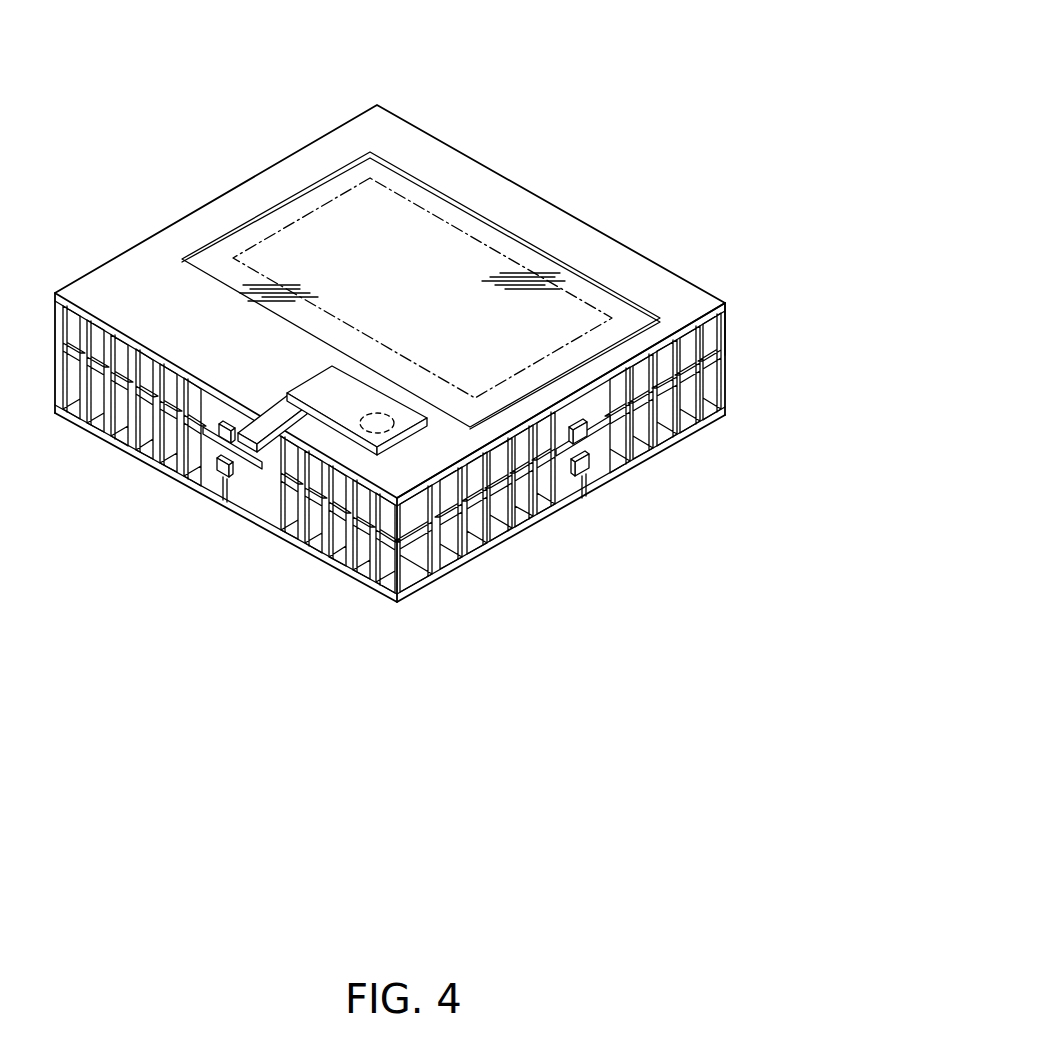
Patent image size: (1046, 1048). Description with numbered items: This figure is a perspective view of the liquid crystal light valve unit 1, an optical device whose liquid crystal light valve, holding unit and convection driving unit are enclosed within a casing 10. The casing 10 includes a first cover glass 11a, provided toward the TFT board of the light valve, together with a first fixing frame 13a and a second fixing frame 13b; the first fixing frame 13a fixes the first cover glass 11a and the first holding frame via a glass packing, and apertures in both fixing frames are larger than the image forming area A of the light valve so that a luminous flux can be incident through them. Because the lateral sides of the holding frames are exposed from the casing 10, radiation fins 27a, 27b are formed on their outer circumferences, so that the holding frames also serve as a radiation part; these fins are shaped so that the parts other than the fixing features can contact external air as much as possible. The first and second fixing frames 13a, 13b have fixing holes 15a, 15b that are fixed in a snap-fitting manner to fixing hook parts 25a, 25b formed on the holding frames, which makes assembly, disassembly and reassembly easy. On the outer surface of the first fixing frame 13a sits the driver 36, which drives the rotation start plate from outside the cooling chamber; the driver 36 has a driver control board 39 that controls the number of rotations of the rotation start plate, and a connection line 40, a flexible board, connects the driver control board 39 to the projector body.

The liquid crystal light valve unit 1 is at (447, 347).
The casing 10 is at (447, 396).
The first cover glass 11a is at (453, 220).
The first fixing frame 13a is at (372, 120).
The second fixing frame 13b is at (425, 603).
The fixing hole 15a is at (247, 430).
The fixing hole 15b is at (229, 477).
The fixing hook part 25a is at (225, 423).
The fixing hook part 25b is at (220, 468).
The radiation fin 27a is at (727, 325).
The radiation fin 27b is at (727, 380).
The driver 36 is at (382, 384).
The driver control board 39 is at (338, 380).
The connection line 40 is at (266, 447).
The image forming area A is at (509, 257).